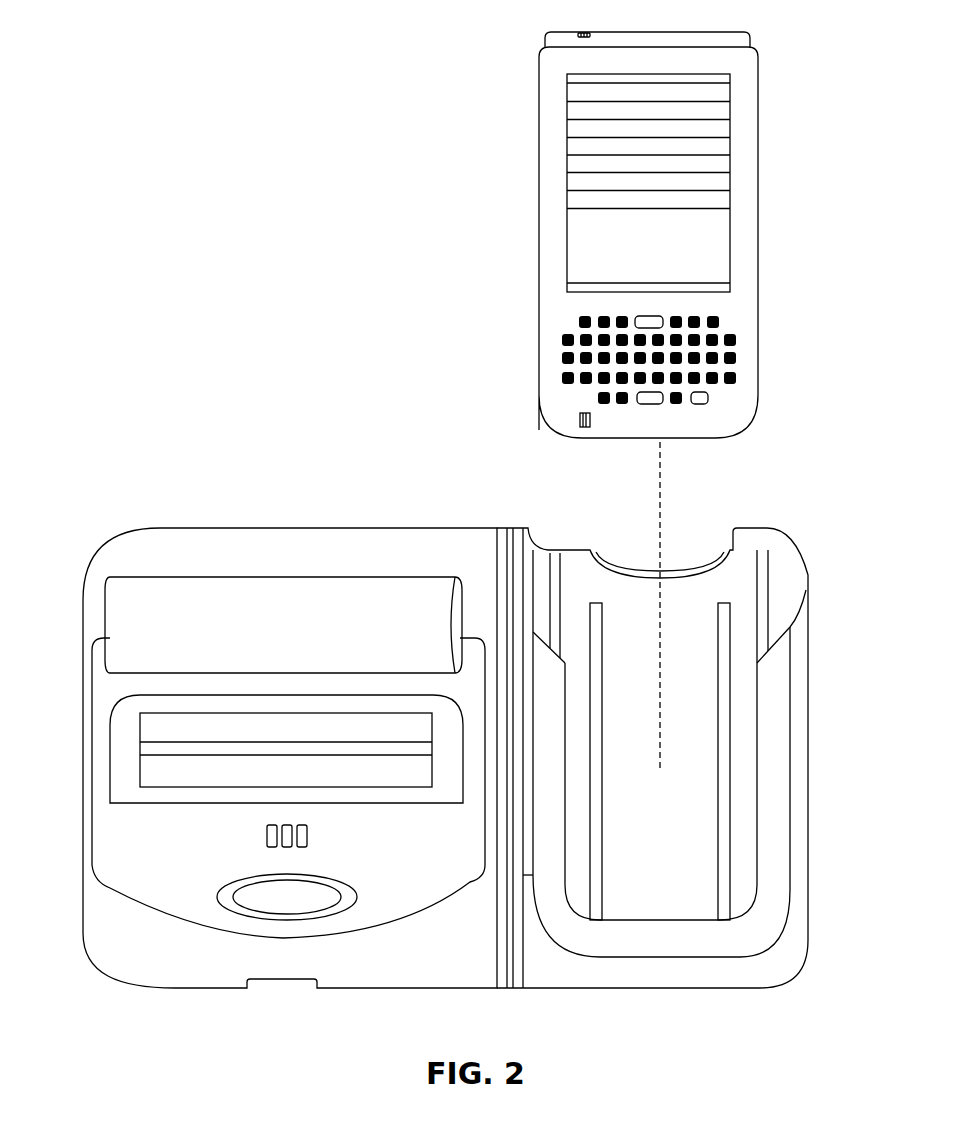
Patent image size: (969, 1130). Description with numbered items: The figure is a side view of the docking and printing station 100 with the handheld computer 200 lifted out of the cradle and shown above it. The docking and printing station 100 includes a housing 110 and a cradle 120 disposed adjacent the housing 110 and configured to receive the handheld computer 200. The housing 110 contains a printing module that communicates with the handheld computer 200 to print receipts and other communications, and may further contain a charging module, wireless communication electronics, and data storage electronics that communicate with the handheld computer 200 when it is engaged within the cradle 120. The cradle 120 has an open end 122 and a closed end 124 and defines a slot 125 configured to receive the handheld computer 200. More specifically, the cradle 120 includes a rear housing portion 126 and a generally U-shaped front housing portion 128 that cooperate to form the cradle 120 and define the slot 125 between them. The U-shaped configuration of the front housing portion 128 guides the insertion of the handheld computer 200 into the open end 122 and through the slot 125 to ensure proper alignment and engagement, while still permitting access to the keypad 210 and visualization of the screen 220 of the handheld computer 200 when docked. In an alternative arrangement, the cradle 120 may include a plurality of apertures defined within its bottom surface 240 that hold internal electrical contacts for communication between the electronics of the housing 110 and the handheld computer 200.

The docking and printing station 100 is at (70, 750).
The housing 110 is at (100, 967).
The cradle 120 is at (740, 547).
The open end 122 is at (792, 582).
The closed end 124 is at (772, 952).
The slot 125 is at (691, 640).
The rear housing portion 126 is at (627, 660).
The front housing portion 128 is at (772, 813).
The handheld computer 200 is at (748, 160).
The keypad 210 is at (730, 357).
The screen 220 is at (602, 228).
The bottom surface 240 is at (677, 448).